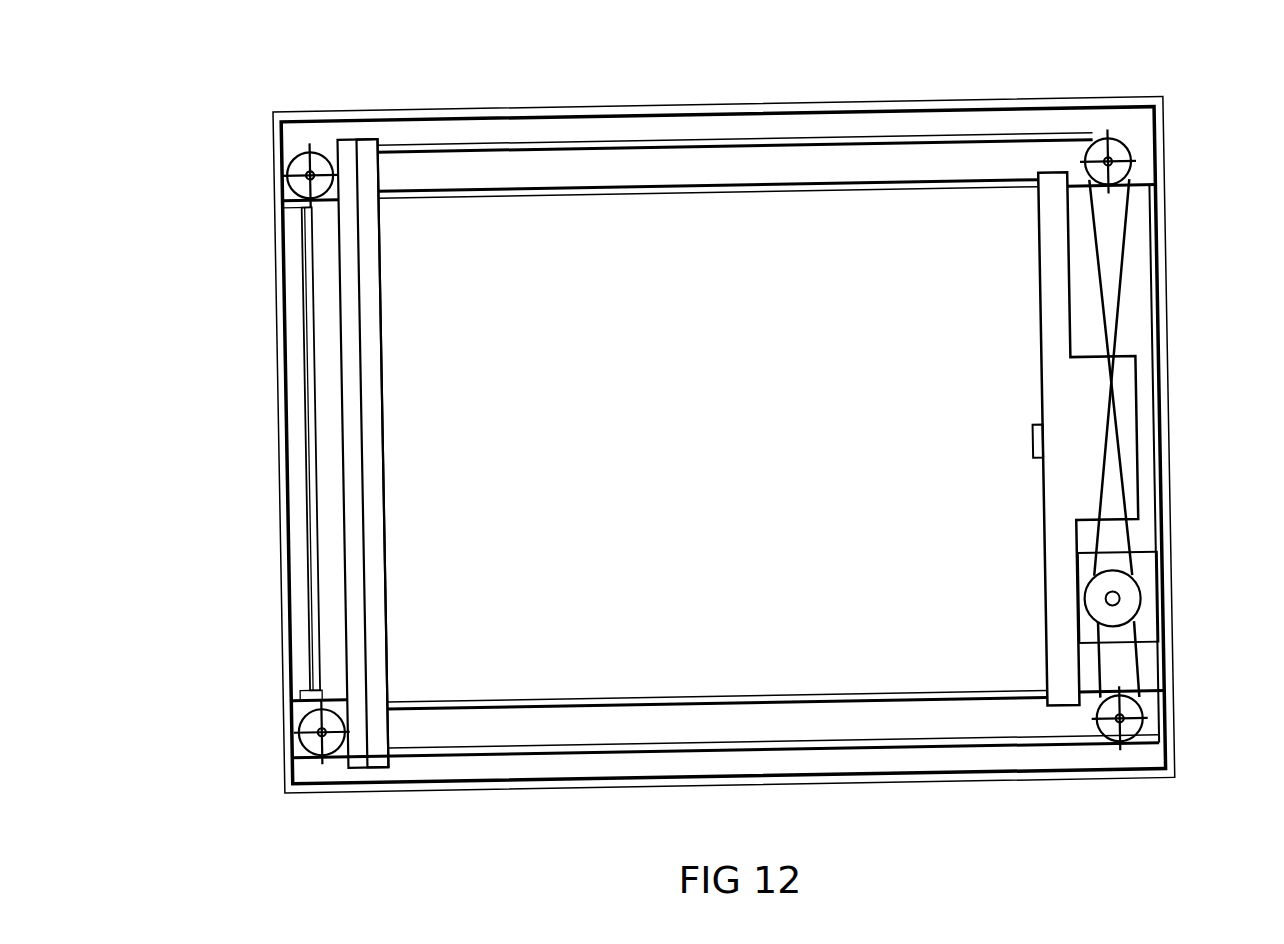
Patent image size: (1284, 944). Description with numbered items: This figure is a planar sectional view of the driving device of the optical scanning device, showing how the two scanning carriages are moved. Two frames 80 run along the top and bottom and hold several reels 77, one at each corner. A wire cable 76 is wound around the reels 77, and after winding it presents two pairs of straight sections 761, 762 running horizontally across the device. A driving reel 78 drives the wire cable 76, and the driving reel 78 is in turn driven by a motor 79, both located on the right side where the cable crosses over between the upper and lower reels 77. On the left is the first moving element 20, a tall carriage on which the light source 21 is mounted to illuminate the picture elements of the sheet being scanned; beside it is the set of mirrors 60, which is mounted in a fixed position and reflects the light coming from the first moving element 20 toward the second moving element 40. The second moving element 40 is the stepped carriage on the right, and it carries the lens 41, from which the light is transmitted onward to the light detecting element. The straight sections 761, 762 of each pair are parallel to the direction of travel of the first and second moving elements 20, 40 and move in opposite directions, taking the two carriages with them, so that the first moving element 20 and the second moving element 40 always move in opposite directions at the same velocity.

The first moving element 20 is at (385, 470).
The light source 21 is at (365, 350).
The second moving element 40 is at (1055, 372).
The lens 41 is at (1033, 441).
The set of mirrors 60 is at (298, 438).
The wire cable 76 is at (773, 187).
The straight section of wire cable 761 is at (828, 697).
The straight section of wire cable 762 is at (847, 742).
The reels 77 is at (303, 162).
The driving reel 78 is at (1130, 598).
The motor 79 is at (1152, 623).
The frames 80 is at (728, 142).